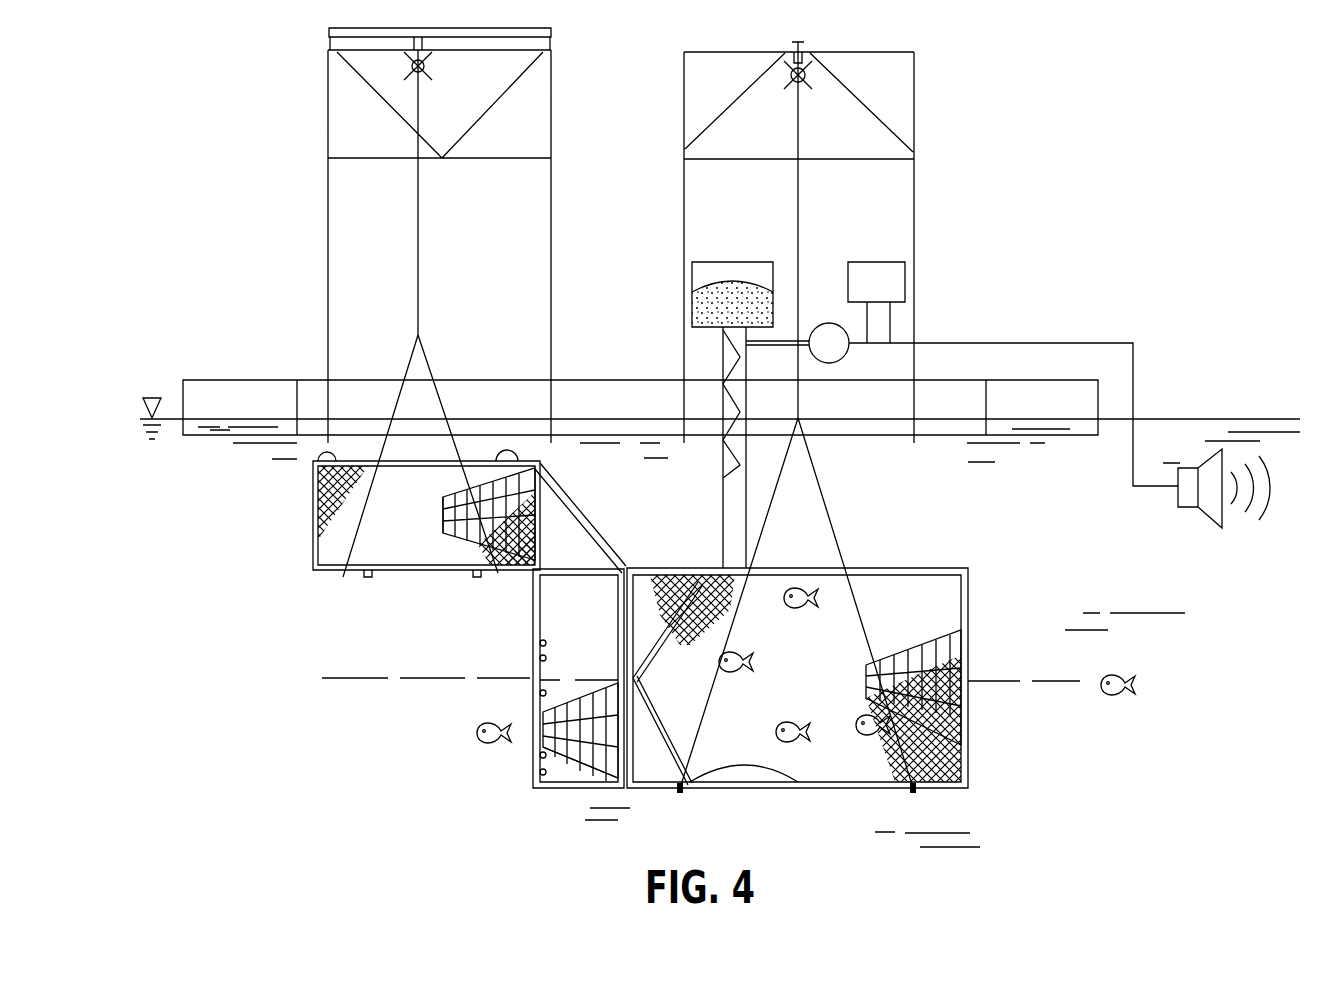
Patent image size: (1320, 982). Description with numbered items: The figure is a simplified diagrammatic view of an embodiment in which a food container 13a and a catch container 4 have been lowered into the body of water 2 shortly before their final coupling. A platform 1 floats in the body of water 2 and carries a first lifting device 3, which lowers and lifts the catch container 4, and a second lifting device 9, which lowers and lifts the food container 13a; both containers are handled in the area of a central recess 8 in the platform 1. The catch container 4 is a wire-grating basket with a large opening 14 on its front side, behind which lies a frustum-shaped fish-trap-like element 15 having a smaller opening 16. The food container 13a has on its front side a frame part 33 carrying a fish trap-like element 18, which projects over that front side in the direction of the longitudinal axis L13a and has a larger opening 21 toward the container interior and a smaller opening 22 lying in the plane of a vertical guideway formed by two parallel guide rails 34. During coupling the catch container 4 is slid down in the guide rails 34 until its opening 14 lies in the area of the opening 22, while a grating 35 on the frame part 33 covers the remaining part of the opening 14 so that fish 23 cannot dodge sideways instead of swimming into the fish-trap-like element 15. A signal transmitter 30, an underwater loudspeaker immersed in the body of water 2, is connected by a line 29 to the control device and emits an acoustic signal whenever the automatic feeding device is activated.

The platform 1 is at (1053, 402).
The body of water 2 is at (1250, 430).
The first lifting device 3 is at (321, 198).
The catch container 4 is at (332, 584).
The central recess 8 is at (948, 402).
The second lifting device 9 is at (938, 186).
The food container 13a is at (880, 548).
The opening 14 is at (543, 507).
The fish-trap-like element 15 is at (458, 533).
The opening 16 is at (443, 505).
The fish trap-like element 18 is at (577, 766).
The opening 21 is at (632, 755).
The opening 22 is at (537, 728).
The fish 23 is at (1125, 672).
The line 29 is at (1135, 370).
The signal transmitter 30 is at (1190, 500).
The frame part 33 is at (603, 524).
The guide rails 34 is at (545, 597).
The grating 35 is at (548, 644).
The longitudinal axis L13a is at (418, 680).